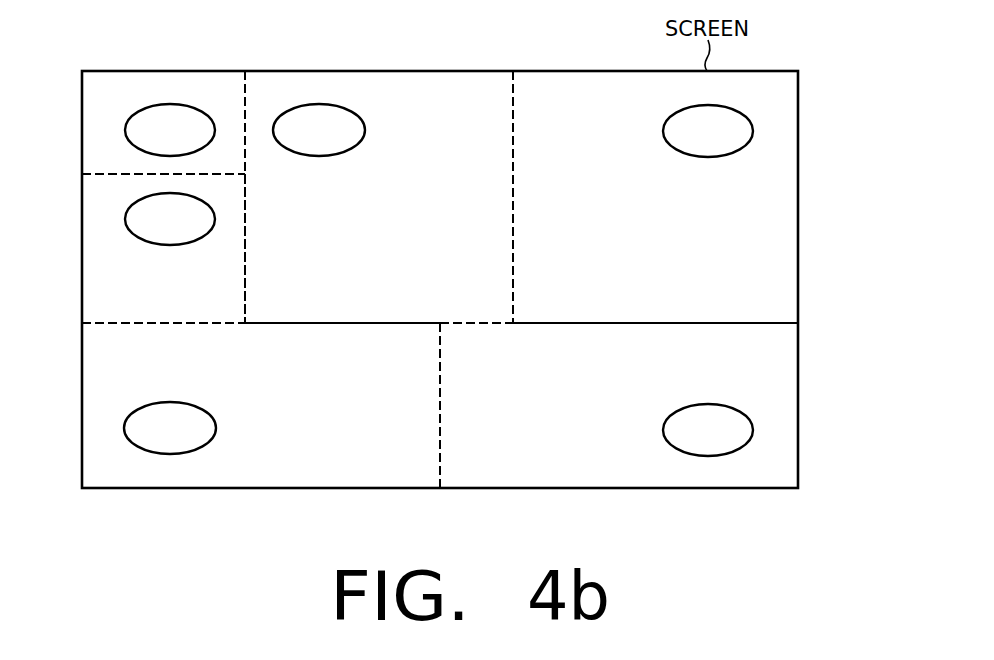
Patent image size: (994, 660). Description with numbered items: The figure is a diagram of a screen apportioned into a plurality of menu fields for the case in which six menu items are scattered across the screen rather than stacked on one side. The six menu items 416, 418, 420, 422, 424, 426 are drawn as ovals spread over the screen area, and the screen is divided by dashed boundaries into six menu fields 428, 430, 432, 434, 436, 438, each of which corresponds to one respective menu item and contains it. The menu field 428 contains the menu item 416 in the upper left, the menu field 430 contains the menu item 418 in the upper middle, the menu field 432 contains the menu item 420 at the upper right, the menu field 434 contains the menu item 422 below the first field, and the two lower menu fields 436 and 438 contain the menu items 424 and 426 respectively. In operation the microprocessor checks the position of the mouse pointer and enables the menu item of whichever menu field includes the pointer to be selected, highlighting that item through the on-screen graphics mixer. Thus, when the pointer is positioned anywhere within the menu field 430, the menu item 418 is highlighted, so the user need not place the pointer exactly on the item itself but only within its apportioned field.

The menu item 416 is at (184, 106).
The menu item 418 is at (346, 106).
The menu item 420 is at (735, 107).
The menu item 422 is at (173, 246).
The menu item 424 is at (198, 406).
The menu item 426 is at (733, 408).
The menu field 428 is at (125, 86).
The menu field 430 is at (468, 86).
The menu field 432 is at (784, 207).
The menu field 434 is at (96, 250).
The menu field 436 is at (172, 473).
The menu field 438 is at (708, 473).